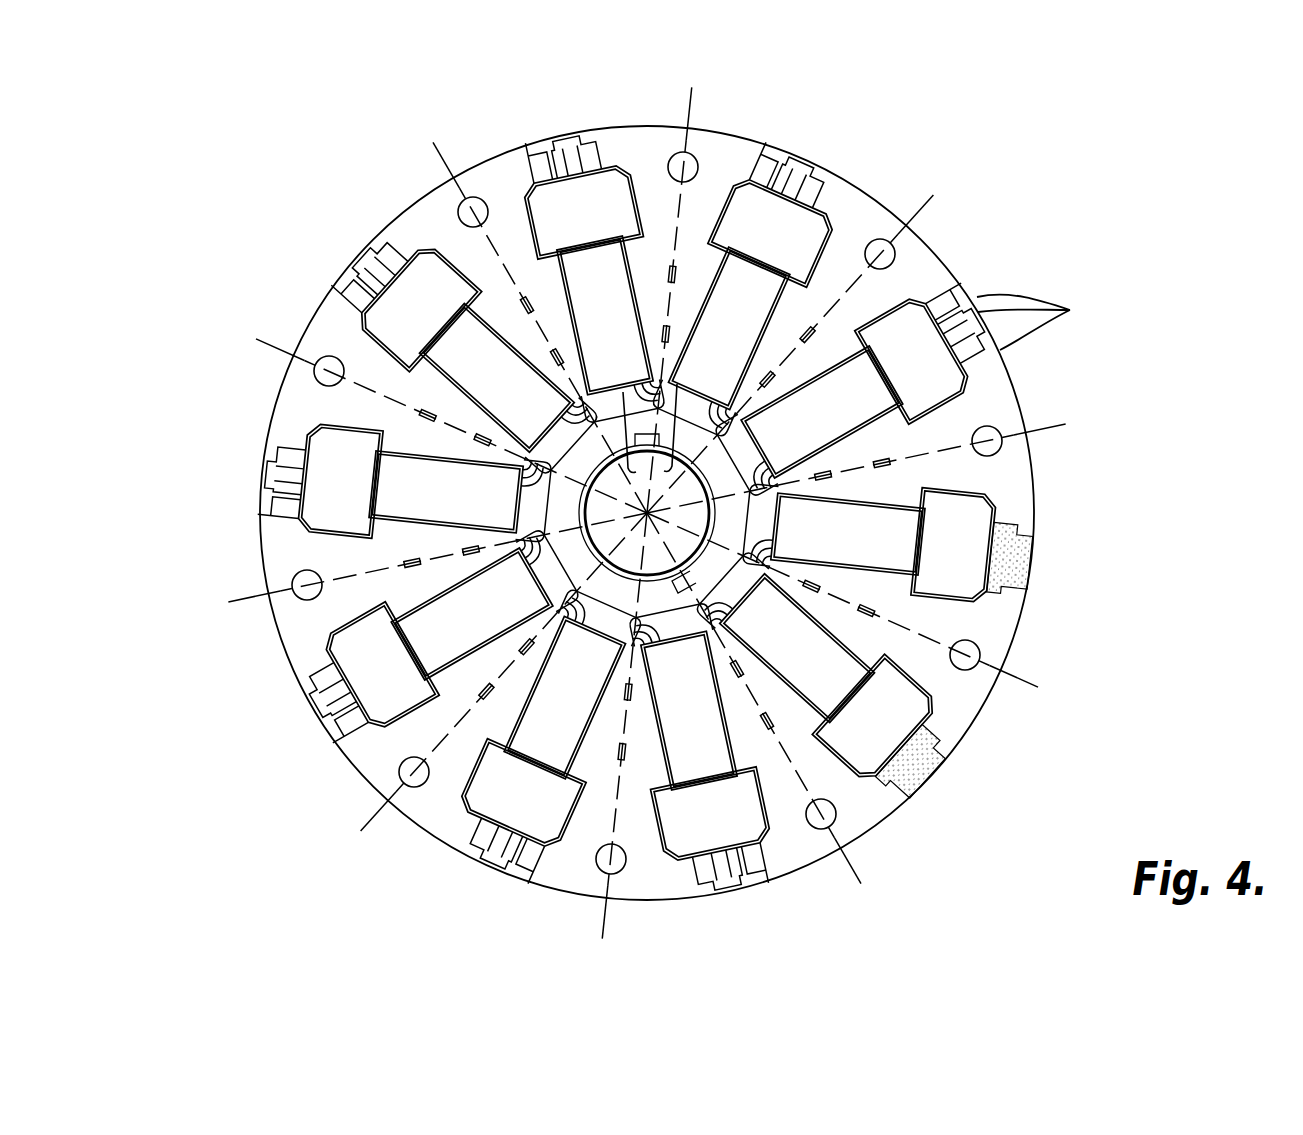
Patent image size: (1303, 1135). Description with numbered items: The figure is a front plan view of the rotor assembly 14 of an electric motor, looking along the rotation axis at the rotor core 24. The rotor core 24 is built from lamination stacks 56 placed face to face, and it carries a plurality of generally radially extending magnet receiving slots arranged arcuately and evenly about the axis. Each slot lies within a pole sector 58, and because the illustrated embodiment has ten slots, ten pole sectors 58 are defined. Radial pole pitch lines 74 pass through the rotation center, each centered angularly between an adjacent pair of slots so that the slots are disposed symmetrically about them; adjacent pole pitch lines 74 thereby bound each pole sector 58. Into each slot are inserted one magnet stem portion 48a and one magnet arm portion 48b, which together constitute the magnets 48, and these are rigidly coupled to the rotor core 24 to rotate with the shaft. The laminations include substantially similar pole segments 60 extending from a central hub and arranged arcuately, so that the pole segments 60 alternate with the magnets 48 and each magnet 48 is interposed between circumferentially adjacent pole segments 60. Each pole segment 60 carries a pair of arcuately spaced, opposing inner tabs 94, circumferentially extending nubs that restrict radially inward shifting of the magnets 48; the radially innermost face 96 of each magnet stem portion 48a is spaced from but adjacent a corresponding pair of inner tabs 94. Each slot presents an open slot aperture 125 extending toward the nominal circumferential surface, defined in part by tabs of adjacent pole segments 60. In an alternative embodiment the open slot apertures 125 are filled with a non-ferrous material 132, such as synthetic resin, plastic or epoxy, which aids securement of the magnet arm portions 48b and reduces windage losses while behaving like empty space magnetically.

The rotor assembly 14 is at (998, 98).
The rotor core 24 is at (953, 267).
The magnets 48 is at (628, 153).
The magnet stem portion 48a is at (637, 300).
The magnet arm portion 48b is at (452, 270).
The lamination stacks 56 is at (1042, 321).
The pole sector 58 is at (507, 185).
The pole segments 60 is at (463, 173).
The radial pole pitch lines 74 is at (227, 604).
The inner tabs 94 is at (660, 380).
The radially innermost face 96 is at (647, 513).
The open slot aperture 125 is at (793, 177).
The non-ferrous material 132 is at (1019, 560).